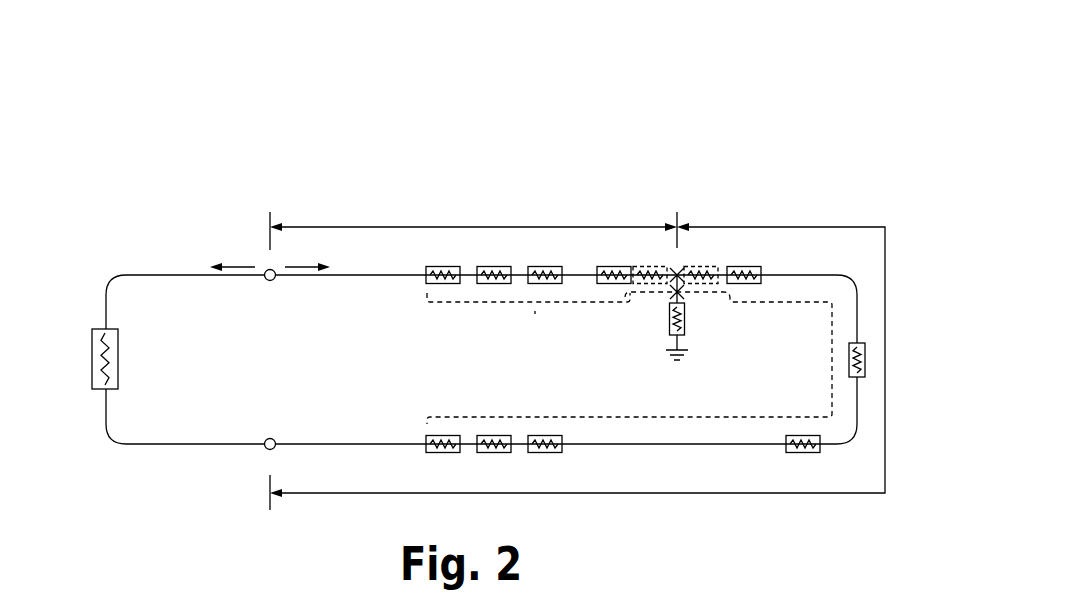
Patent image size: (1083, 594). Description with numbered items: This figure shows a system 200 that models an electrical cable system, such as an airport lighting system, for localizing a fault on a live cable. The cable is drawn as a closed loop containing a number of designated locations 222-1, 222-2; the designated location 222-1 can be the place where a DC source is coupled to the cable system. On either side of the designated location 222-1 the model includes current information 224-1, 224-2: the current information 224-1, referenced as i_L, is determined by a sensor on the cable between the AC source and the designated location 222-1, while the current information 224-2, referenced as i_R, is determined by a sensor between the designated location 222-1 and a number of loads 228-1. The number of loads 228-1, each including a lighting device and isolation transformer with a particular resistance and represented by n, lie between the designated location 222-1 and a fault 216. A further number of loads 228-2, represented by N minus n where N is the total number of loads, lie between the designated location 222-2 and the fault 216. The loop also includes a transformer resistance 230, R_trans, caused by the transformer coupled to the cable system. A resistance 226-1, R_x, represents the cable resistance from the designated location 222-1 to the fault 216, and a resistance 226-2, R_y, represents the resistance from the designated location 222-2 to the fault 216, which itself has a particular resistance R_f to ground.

The system 200 is at (740, 39).
The fault 216 is at (680, 270).
The designated location 222-1 is at (270, 281).
The designated location 222-2 is at (270, 438).
The current information 224-1 is at (242, 228).
The current information 224-2 is at (315, 245).
The resistance 226-1 is at (468, 200).
The resistance 226-2 is at (794, 200).
The number of loads 228-1 is at (540, 320).
The number of loads 228-2 is at (686, 405).
The transformer resistance 230 is at (120, 362).